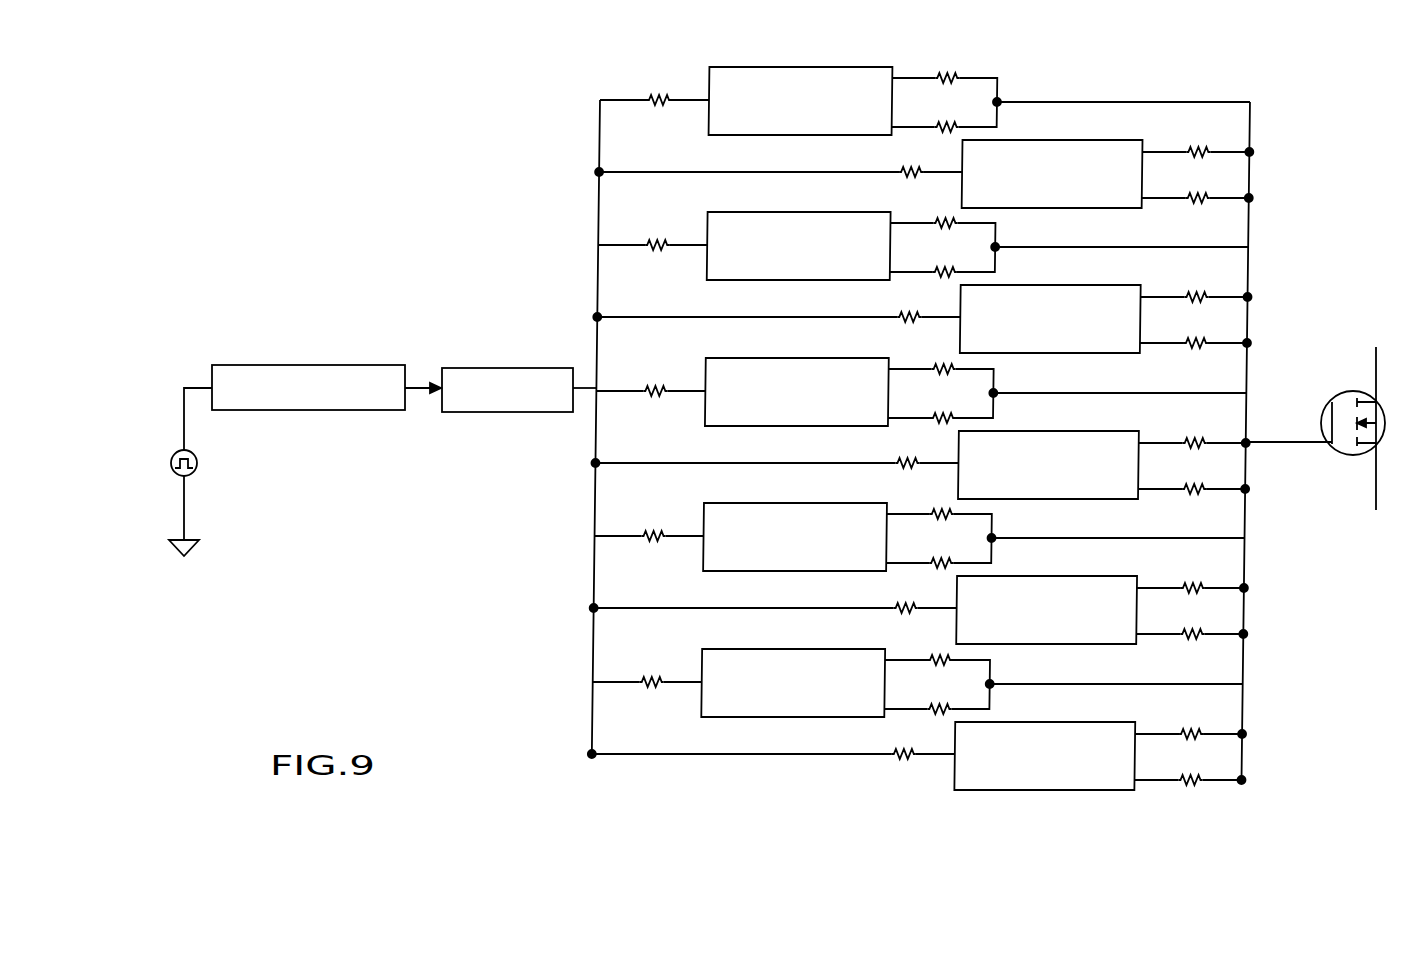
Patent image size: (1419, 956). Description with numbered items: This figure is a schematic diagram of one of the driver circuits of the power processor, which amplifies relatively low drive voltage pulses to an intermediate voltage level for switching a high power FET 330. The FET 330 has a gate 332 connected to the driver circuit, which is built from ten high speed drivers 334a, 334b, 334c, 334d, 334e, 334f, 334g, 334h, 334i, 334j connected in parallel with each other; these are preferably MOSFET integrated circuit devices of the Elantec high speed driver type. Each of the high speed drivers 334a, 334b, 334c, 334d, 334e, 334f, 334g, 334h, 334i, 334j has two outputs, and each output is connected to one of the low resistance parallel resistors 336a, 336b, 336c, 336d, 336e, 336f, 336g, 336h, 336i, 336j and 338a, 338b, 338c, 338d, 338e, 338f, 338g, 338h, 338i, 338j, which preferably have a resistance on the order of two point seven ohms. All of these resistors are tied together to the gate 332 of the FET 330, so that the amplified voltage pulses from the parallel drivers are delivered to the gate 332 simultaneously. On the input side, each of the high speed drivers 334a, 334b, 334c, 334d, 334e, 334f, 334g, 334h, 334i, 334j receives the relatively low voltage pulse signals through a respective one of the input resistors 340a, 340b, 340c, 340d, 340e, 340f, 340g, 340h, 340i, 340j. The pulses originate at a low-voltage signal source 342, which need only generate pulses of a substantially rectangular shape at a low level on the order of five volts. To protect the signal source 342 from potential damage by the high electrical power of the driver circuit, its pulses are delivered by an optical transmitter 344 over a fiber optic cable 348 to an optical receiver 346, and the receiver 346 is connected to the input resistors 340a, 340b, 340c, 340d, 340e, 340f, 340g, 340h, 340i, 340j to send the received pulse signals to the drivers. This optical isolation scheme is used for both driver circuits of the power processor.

The high power FET 330 is at (1325, 423).
The gate 332 is at (1327, 444).
The high speed driver 334a is at (709, 67).
The high speed driver 334b is at (1042, 140).
The high speed driver 334c is at (709, 212).
The high speed driver 334d is at (1042, 285).
The high speed driver 334e is at (709, 358).
The high speed driver 334f is at (1042, 431).
The high speed driver 334g is at (709, 503).
The high speed driver 334h is at (1042, 576).
The high speed driver 334i is at (709, 649).
The high speed driver 334j is at (1042, 722).
The parallel resistor 336a is at (940, 77).
The parallel resistor 336b is at (1190, 152).
The parallel resistor 336c is at (942, 210).
The parallel resistor 336d is at (1190, 297).
The parallel resistor 336e is at (942, 356).
The parallel resistor 336f is at (1190, 443).
The parallel resistor 336g is at (942, 501).
The parallel resistor 336h is at (1190, 588).
The parallel resistor 336i is at (942, 647).
The parallel resistor 336j is at (1190, 734).
The parallel resistor 338a is at (942, 126).
The parallel resistor 338b is at (1190, 198).
The parallel resistor 338c is at (942, 271).
The parallel resistor 338d is at (1190, 343).
The parallel resistor 338e is at (942, 417).
The parallel resistor 338f is at (1190, 489).
The parallel resistor 338g is at (942, 562).
The parallel resistor 338h is at (1190, 634).
The parallel resistor 338i is at (942, 708).
The parallel resistor 338j is at (1190, 780).
The input resistor 340a is at (649, 103).
The input resistor 340b is at (901, 172).
The input resistor 340c is at (649, 248).
The input resistor 340d is at (901, 317).
The input resistor 340e is at (649, 394).
The input resistor 340f is at (901, 463).
The input resistor 340g is at (649, 539).
The input resistor 340h is at (901, 608).
The input resistor 340i is at (649, 685).
The input resistor 340j is at (901, 754).
The signal source 342 is at (196, 452).
The optical transmitter 344 is at (310, 411).
The optical receiver 346 is at (508, 367).
The fiber optic cable 348 is at (415, 383).